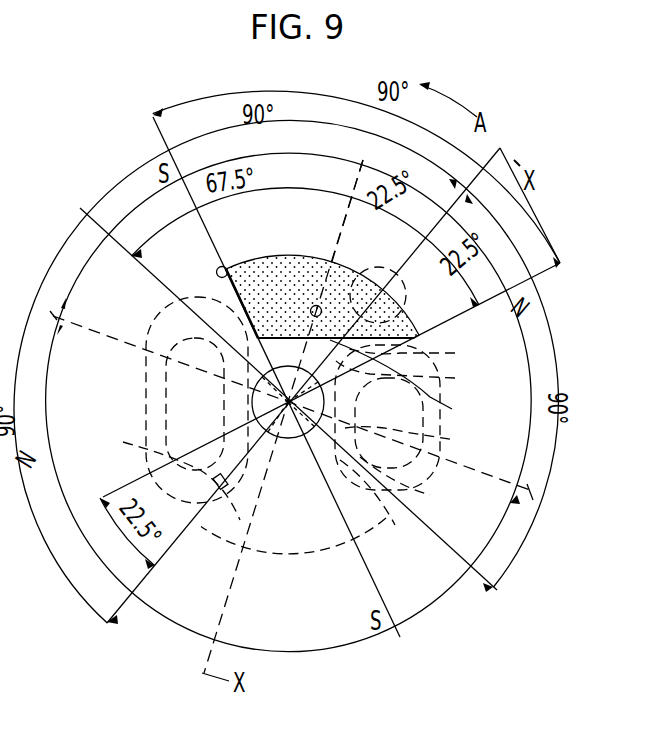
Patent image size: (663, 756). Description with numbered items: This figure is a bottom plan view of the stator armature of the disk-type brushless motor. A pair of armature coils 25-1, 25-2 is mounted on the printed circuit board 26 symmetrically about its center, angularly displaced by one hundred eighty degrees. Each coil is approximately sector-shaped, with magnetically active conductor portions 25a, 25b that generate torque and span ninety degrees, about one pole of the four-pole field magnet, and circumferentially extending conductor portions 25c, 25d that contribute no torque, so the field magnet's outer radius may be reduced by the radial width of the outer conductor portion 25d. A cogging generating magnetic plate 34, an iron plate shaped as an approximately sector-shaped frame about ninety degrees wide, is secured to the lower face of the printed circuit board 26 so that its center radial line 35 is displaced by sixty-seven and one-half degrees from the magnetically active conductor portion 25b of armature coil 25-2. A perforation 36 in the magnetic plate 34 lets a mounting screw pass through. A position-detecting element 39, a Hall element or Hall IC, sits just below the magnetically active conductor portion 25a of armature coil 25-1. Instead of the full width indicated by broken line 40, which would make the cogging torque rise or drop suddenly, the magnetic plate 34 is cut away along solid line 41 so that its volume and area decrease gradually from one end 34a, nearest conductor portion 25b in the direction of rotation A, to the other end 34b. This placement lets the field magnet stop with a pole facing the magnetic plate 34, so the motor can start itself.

The printed circuit board 26 is at (512, 146).
The cogging generating magnetic plate 34 is at (292, 266).
The one end of the magnetic plate 34a is at (226, 266).
The other end of the magnetic plate 34b is at (418, 354).
The center radial line 35 is at (336, 236).
The perforation 36 is at (321, 306).
The position-detecting element 39 is at (221, 490).
The broken line 40 is at (407, 379).
The solid line 41 is at (405, 381).
The magnetically active conductor portion 25a is at (372, 291).
The magnetically active conductor portion 25b is at (208, 284).
The circumferentially extending conductor portion 25c is at (340, 418).
The circumferentially extending conductor portion 25d is at (418, 442).
The armature coil 25-1 is at (293, 531).
The armature coil 25-2 is at (417, 490).